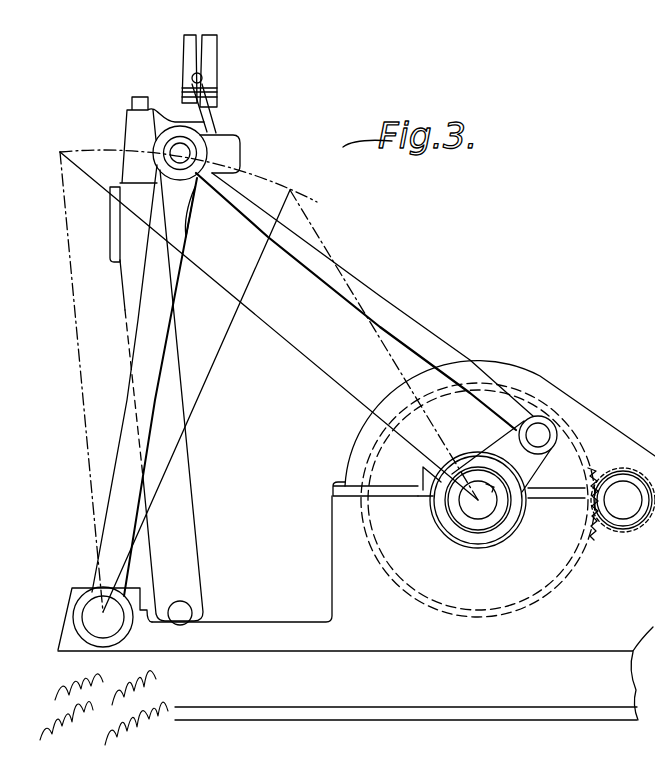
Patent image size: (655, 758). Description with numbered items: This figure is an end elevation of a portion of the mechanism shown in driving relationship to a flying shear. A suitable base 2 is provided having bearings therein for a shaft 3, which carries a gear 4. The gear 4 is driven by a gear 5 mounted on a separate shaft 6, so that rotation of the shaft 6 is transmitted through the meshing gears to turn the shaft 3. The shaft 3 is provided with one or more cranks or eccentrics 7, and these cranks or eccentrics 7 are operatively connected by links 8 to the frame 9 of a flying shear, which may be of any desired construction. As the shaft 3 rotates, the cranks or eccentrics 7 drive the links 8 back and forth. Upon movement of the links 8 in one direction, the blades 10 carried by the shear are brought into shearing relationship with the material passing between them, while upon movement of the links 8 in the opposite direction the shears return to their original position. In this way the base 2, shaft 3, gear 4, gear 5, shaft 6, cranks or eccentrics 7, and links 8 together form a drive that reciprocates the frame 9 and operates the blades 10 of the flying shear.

The base 2 is at (404, 696).
The shaft 3 is at (478, 512).
The gear 4 is at (565, 578).
The gear 5 is at (634, 525).
The shaft 6 is at (623, 497).
The cranks or eccentrics 7 is at (516, 436).
The links 8 is at (398, 320).
The frame 9 is at (143, 323).
The blades 10 is at (205, 50).